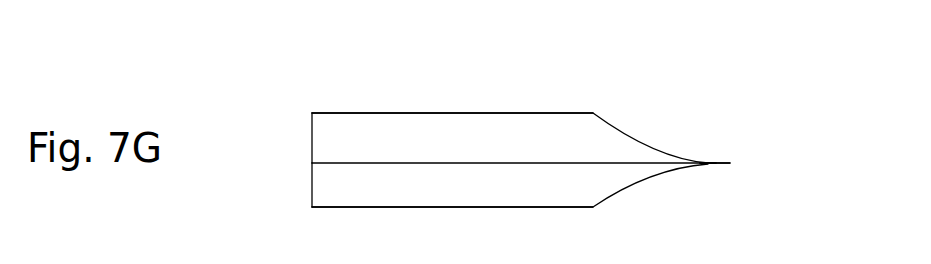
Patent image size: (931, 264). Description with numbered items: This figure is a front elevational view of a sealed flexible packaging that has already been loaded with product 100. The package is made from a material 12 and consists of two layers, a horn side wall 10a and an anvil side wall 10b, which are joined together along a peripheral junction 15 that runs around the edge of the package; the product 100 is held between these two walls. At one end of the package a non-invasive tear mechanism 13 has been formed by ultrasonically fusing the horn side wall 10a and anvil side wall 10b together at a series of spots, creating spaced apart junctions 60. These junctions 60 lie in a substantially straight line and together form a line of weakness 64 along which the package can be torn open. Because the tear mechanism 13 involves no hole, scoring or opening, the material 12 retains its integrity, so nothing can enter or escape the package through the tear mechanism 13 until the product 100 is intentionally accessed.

The horn side wall 10a is at (435, 122).
The anvil side wall 10b is at (545, 192).
The material 12 is at (527, 125).
The non-invasive tear mechanism 13 is at (709, 161).
The peripheral junction 15 is at (389, 161).
The junctions 60 is at (708, 162).
The line of weakness 64 is at (708, 162).
The product 100 is at (405, 187).